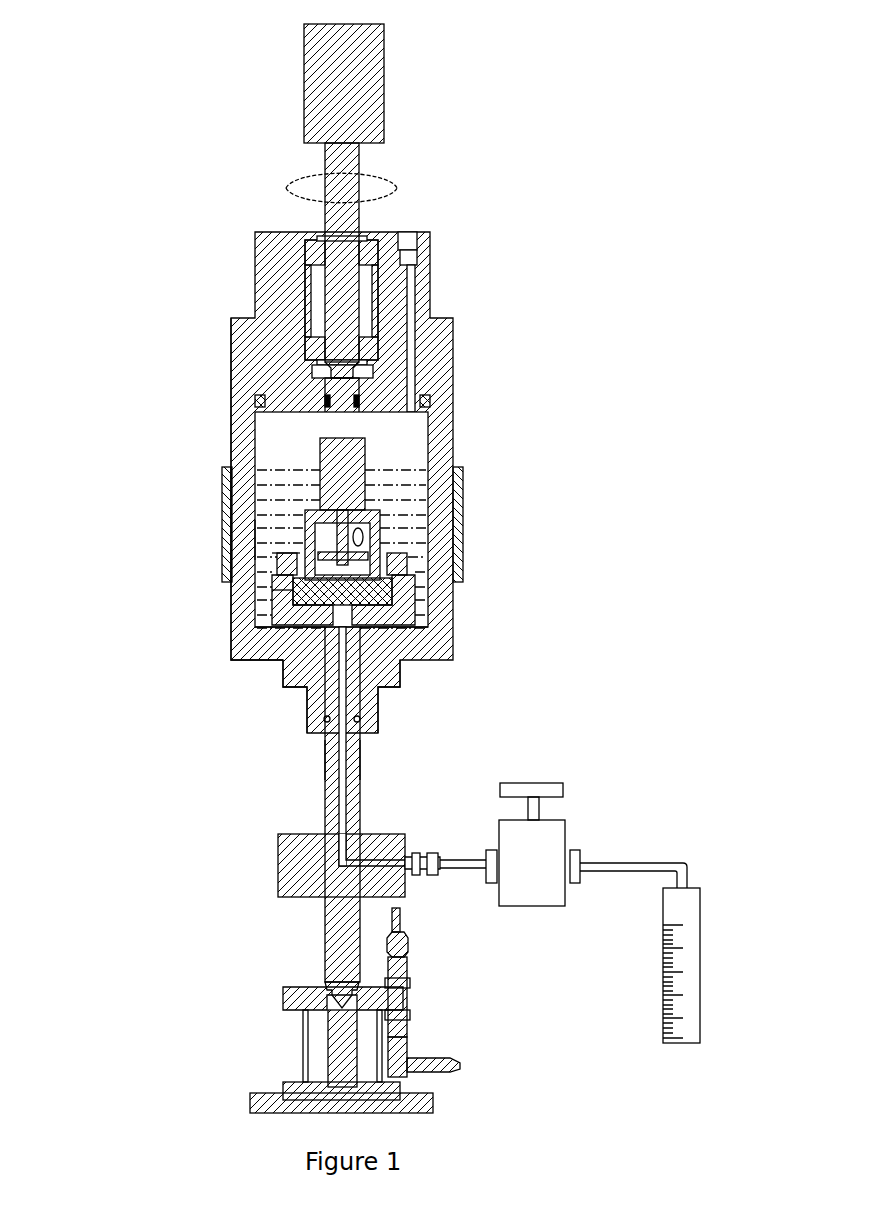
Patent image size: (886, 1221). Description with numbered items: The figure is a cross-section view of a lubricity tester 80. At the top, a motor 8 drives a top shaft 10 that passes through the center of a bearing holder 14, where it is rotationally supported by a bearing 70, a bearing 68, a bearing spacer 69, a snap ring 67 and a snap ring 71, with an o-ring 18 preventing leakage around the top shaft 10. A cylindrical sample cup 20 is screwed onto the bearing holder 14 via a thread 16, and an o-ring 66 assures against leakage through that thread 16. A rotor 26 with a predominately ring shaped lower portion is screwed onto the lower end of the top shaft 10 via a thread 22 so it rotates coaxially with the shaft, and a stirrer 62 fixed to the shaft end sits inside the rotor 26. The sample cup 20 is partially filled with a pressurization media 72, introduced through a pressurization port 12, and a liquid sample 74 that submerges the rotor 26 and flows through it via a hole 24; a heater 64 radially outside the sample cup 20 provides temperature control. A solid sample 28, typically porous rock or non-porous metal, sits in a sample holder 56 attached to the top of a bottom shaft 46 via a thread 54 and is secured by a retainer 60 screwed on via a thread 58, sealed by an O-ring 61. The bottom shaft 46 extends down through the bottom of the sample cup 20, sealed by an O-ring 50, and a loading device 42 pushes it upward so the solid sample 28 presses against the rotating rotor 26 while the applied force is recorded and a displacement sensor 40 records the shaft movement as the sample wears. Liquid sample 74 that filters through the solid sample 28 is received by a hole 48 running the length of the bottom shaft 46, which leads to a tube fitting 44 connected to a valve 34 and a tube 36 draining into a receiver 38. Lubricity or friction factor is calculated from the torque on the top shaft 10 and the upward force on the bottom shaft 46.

The motor 8 is at (384, 85).
The top shaft 10 is at (363, 167).
The pressurization port 12 is at (418, 232).
The bearing holder 14 is at (421, 290).
The thread 16 is at (400, 335).
The o-ring 18 is at (430, 372).
The sample cup 20 is at (365, 445).
The thread 22 is at (380, 512).
The hole 24 is at (368, 535).
The rotor 26 is at (392, 580).
The solid sample 28 is at (410, 592).
The valve 34 is at (548, 842).
The tube 36 is at (686, 880).
The receiver 38 is at (692, 958).
The displacement sensor 40 is at (407, 1012).
The loading device 42 is at (325, 1032).
The tube fitting 44 is at (300, 860).
The bottom shaft 46 is at (330, 822).
The hole 48 is at (340, 772).
The O-ring 50 is at (196, 752).
The thread 54 is at (330, 645).
The sample holder 56 is at (300, 618).
The thread 58 is at (300, 563).
The retainer 60 is at (290, 537).
The O-ring 61 is at (300, 592).
The stirrer 62 is at (262, 500).
The heater 64 is at (224, 468).
The o-ring 66 is at (258, 398).
The snap ring 67 is at (240, 362).
The bearing 68 is at (253, 318).
The bearing spacer 69 is at (308, 300).
The bearing 70 is at (310, 252).
The snap ring 71 is at (320, 238).
The pressurization media 72 is at (405, 461).
The liquid sample 74 is at (305, 500).
The lubricity tester 80 is at (268, 152).